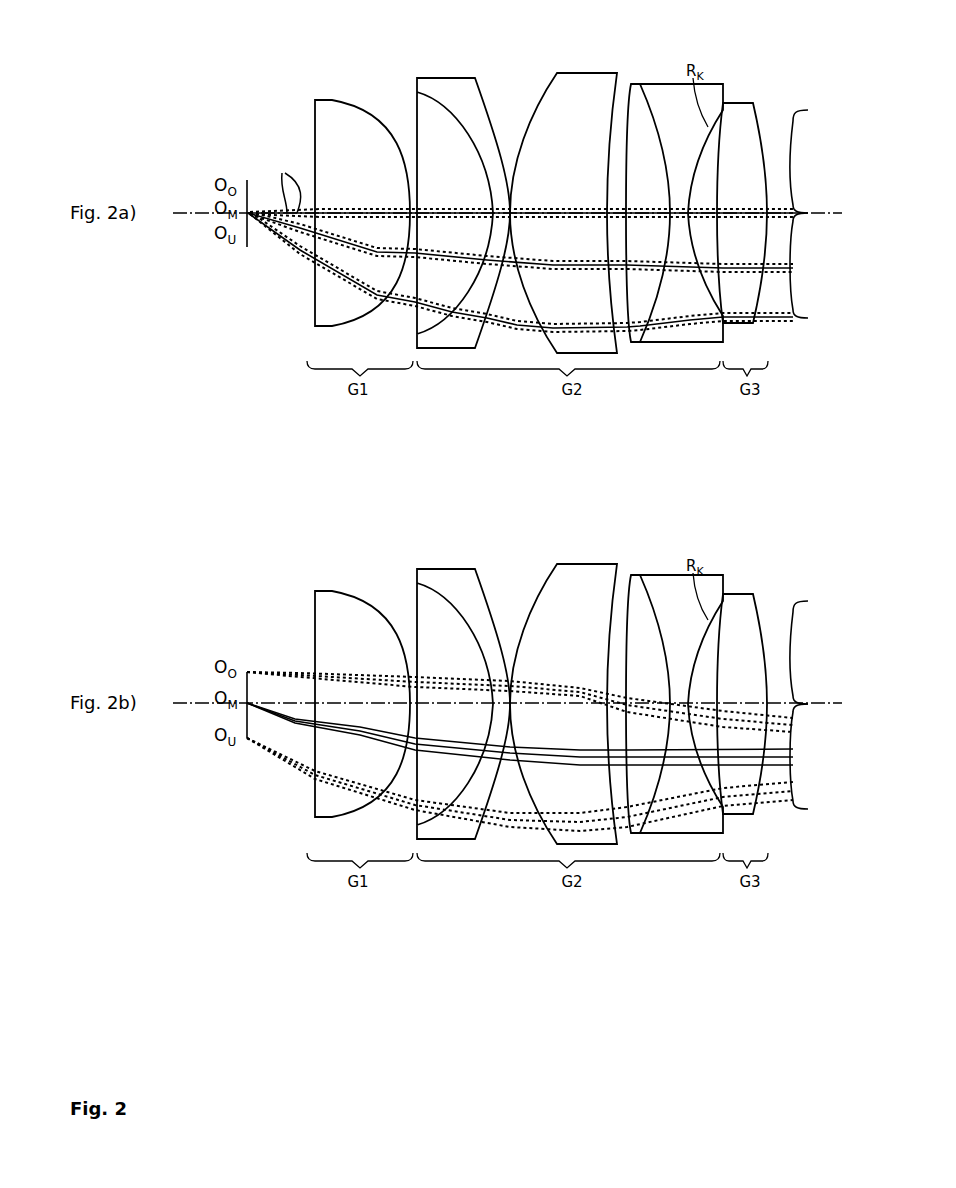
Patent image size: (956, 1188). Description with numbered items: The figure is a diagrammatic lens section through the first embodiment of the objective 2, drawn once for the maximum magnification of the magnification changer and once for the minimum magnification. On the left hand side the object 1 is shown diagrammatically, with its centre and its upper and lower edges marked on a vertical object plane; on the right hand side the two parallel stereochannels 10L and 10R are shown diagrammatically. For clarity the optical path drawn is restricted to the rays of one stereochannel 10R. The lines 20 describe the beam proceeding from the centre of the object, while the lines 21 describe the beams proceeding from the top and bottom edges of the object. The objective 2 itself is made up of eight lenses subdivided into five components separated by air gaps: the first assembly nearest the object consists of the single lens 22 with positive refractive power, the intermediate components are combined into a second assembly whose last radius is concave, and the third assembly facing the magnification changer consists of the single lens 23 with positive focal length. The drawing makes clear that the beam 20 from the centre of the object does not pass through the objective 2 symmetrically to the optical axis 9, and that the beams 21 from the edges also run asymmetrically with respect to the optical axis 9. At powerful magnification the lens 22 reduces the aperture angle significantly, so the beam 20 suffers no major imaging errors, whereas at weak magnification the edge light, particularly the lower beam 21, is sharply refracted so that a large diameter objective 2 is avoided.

In FIG. 2A, the object 1 is at (246, 181).
In FIG. 2B, the object 1 is at (246, 672).
In FIG. 2A, the objective 2 is at (778, 55).
In FIG. 2B, the objective 2 is at (778, 551).
In FIG. 2A, the optical axis 9 is at (183, 212).
In FIG. 2B, the optical axis 9 is at (183, 702).
In FIG. 2A, the beam from centre of object 20 is at (287, 184).
In FIG. 2B, the beam from centre of object 20 is at (265, 715).
In FIG. 2B, the beams from object edges 21 is at (270, 679).
In FIG. 2A, the single lens of first assembly 22 is at (373, 122).
In FIG. 2B, the single lens of first assembly 22 is at (373, 614).
In FIG. 2A, the single lens of third assembly 23 is at (733, 102).
In FIG. 2B, the single lens of third assembly 23 is at (733, 596).
In FIG. 2A, the left stereochannel 10L is at (812, 161).
In FIG. 2B, the left stereochannel 10L is at (812, 652).
In FIG. 2A, the right stereochannel 10R is at (813, 265).
In FIG. 2B, the right stereochannel 10R is at (813, 756).